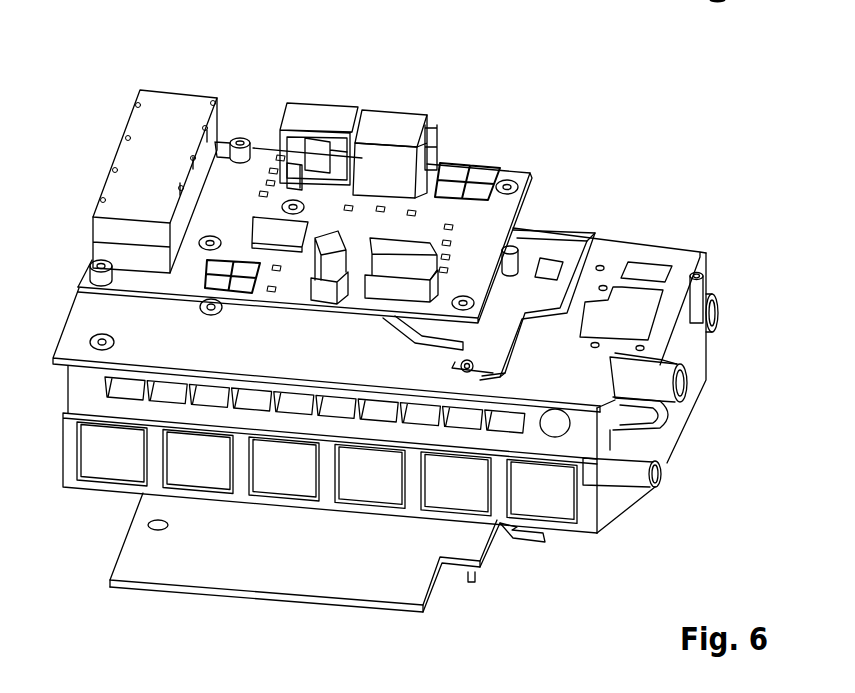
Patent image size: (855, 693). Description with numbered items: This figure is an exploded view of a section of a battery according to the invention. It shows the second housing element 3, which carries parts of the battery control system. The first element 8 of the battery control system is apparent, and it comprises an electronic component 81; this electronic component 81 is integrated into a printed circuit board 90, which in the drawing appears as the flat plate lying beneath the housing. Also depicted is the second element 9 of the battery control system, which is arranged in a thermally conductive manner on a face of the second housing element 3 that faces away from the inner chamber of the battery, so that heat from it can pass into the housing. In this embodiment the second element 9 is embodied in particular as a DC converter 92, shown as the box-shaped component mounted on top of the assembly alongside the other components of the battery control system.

The second housing element 3 is at (705, 251).
The second element of the battery control system 9 is at (398, 138).
The DC converter 92 is at (140, 156).
The printed circuit board 90 is at (190, 553).
The first element of the battery control system 8 is at (305, 573).
The electronic component 81 is at (278, 553).